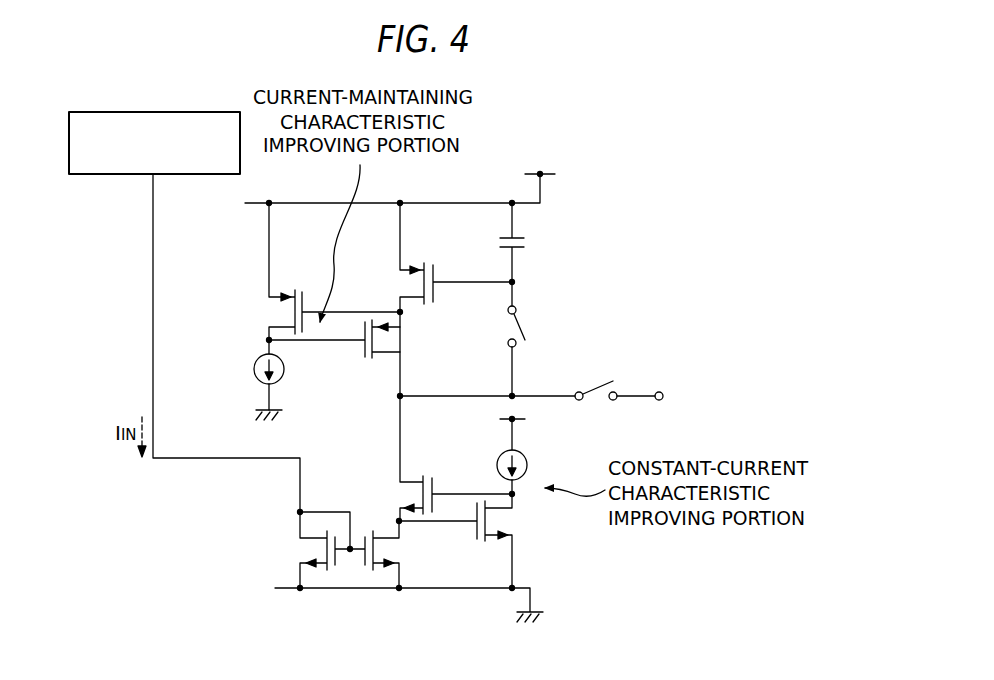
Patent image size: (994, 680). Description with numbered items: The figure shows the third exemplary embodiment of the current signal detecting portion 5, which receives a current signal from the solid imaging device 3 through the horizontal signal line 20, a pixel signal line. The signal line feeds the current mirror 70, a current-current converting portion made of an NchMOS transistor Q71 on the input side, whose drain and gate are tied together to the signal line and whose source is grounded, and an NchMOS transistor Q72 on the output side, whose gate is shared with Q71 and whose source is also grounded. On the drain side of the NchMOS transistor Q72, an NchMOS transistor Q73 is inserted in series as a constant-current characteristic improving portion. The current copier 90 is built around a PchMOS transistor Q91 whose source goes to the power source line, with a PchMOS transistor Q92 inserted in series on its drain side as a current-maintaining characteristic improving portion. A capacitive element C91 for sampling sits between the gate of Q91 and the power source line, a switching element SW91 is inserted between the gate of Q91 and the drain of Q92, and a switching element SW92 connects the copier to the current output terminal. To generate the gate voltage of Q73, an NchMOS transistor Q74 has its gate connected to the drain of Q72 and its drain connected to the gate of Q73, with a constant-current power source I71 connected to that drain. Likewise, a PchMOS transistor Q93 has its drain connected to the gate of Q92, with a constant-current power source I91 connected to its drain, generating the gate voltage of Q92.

The solid imaging device 3 is at (67, 143).
The horizontal signal line 20 is at (150, 302).
The current signal detecting portion 5 is at (633, 216).
The current copier 90 is at (463, 228).
The current mirror 70 is at (348, 576).
The PchMOS transistor Q91 is at (407, 283).
The PchMOS transistor Q92 is at (393, 342).
The PchMOS transistor Q93 is at (270, 312).
The constant-current power source I91 is at (248, 369).
The capacitive element C91 is at (530, 243).
The switching element SW91 is at (526, 327).
The switching element SW92 is at (596, 402).
The constant-current power source I71 is at (529, 465).
The NchMOS transistor Q71 is at (305, 549).
The NchMOS transistor Q72 is at (400, 549).
The NchMOS transistor Q73 is at (402, 493).
The NchMOS transistor Q74 is at (515, 522).